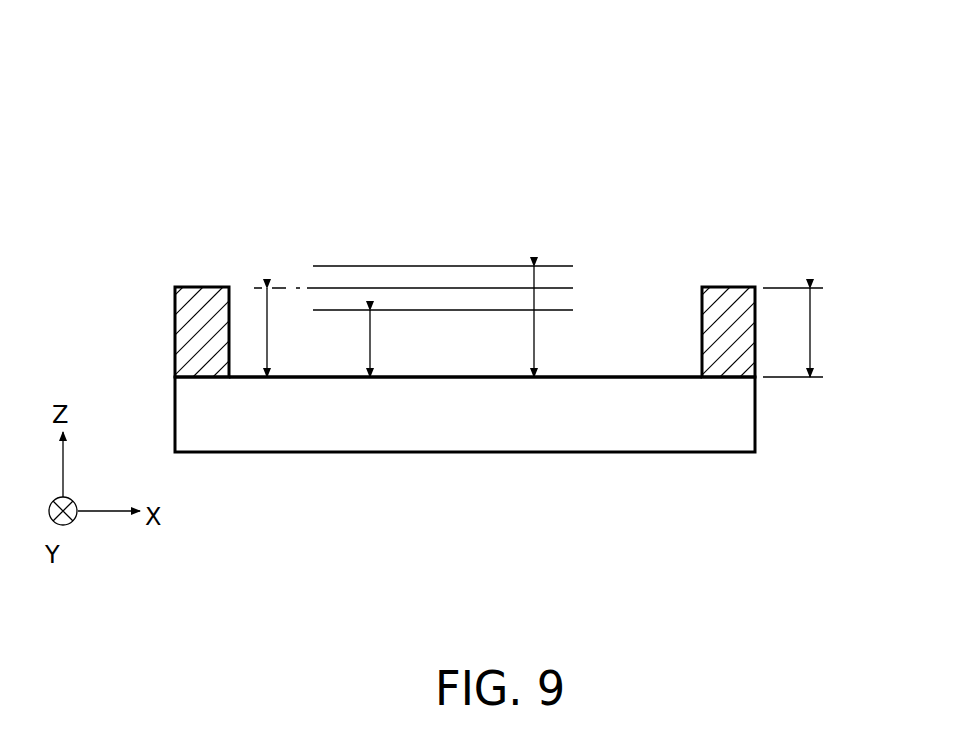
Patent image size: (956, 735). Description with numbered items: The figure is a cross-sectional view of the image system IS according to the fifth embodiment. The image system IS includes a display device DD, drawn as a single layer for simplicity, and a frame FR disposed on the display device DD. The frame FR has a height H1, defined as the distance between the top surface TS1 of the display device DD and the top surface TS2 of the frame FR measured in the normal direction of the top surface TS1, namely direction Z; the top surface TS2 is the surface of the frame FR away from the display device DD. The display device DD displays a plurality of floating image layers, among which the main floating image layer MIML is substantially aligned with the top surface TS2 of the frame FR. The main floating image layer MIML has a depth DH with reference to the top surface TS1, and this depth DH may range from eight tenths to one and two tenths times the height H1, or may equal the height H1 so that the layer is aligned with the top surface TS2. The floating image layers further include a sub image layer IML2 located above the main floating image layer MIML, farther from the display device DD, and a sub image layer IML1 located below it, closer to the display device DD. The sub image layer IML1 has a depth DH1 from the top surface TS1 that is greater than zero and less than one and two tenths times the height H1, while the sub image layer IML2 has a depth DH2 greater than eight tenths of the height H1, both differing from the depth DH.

The image system IS is at (178, 112).
The sub image layer IML2 is at (328, 266).
The main floating image layer MIML is at (457, 288).
The sub image layer IML1 is at (573, 310).
The top surface of the frame TS2 is at (725, 288).
The frame FR is at (195, 318).
The depth of the main floating image layer DH is at (282, 332).
The depth of the sub image layer IML1 DH1 is at (399, 343).
The depth of the sub image layer IML2 DH2 is at (503, 321).
The height of the frame H1 is at (793, 332).
The display device DD is at (495, 423).
The top surface of the display device TS1 is at (587, 378).